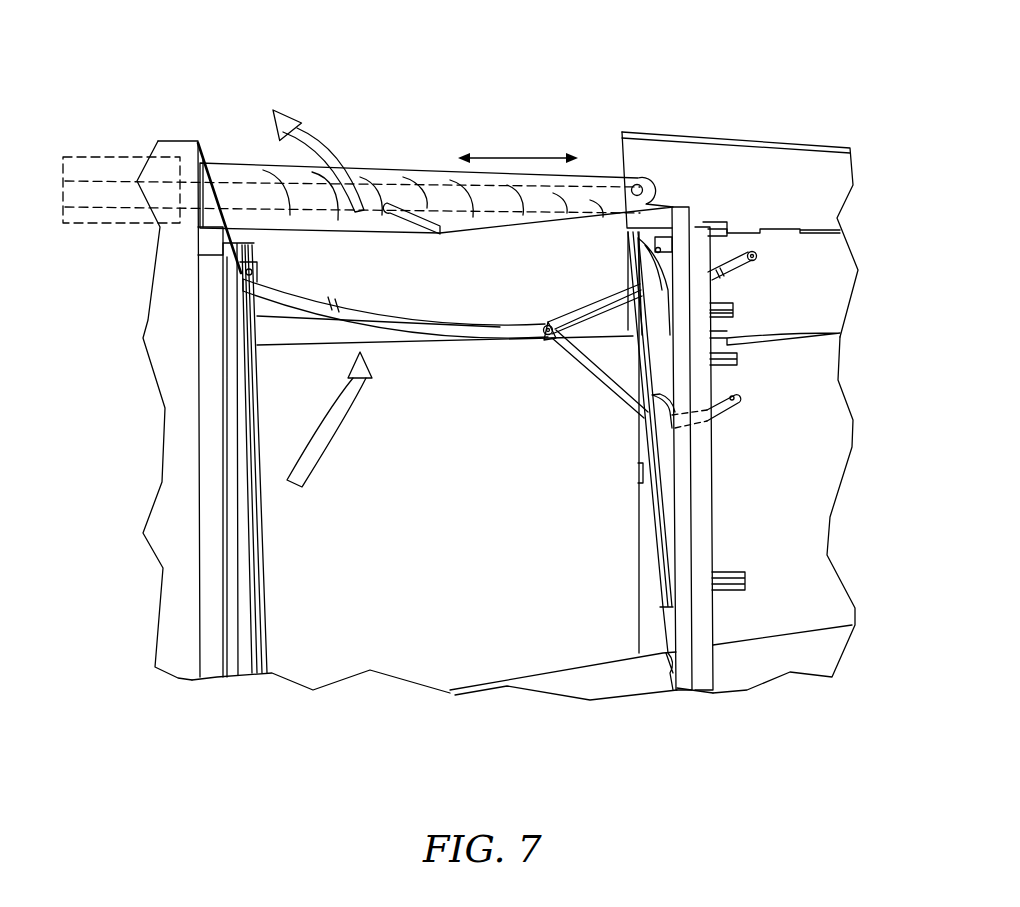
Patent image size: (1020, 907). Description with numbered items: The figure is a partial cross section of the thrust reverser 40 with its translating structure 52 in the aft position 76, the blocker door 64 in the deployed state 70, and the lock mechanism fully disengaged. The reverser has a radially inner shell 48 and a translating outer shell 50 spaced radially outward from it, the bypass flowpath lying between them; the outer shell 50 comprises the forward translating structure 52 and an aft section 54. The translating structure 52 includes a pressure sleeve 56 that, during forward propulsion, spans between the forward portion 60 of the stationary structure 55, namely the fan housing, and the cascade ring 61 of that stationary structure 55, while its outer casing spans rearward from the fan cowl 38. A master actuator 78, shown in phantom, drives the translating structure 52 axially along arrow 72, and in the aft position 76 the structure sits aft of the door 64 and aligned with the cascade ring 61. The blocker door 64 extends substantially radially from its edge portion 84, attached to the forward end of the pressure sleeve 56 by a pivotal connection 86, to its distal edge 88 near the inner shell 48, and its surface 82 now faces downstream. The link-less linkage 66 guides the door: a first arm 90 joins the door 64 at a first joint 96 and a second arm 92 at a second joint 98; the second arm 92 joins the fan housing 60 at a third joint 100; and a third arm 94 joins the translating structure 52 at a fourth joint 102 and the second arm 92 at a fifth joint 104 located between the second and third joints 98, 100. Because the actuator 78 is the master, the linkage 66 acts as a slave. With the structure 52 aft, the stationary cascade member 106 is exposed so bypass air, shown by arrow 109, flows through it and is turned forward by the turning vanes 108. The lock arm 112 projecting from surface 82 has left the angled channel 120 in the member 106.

The fan cowl 38 is at (178, 680).
The thrust reverser 40 is at (753, 363).
The radially inner shell 48 is at (593, 653).
The translating outer shell 50 is at (814, 620).
The translating structure 52 is at (695, 125).
The aft section 54 is at (830, 412).
The stationary structure 55 is at (177, 135).
The pressure sleeve 56 is at (763, 231).
The forward portion of stationary structure (fan housing) 60 is at (215, 680).
The cascade ring 61 is at (705, 220).
The blocker door 64 is at (652, 603).
The linkage 66 is at (383, 297).
The deployed state 70 is at (625, 447).
The arrow (axial direction) 72 is at (518, 156).
The aft position 76 is at (435, 281).
The master actuator 78 is at (125, 225).
The opposite surface 82 is at (660, 498).
The edge portion 84 is at (640, 265).
The pivotal connection 86 is at (657, 243).
The distal edge 88 is at (675, 637).
The first arm 90 is at (613, 380).
The second arm 92 is at (443, 330).
The third arm 94 is at (607, 325).
The first pivotal joint 96 is at (637, 417).
The second pivotal joint 98 is at (563, 340).
The third pivotal joint 100 is at (255, 270).
The fourth pivotal joint 102 is at (755, 265).
The fifth pivotal joint 104 is at (540, 345).
The stationary member (cascade member) 106 is at (381, 163).
The turning vane 108 is at (260, 180).
The arrow (diverted bypass airflow) 109 is at (320, 118).
The arm (of lock mechanism) 112 is at (720, 412).
The channel 120 is at (413, 217).